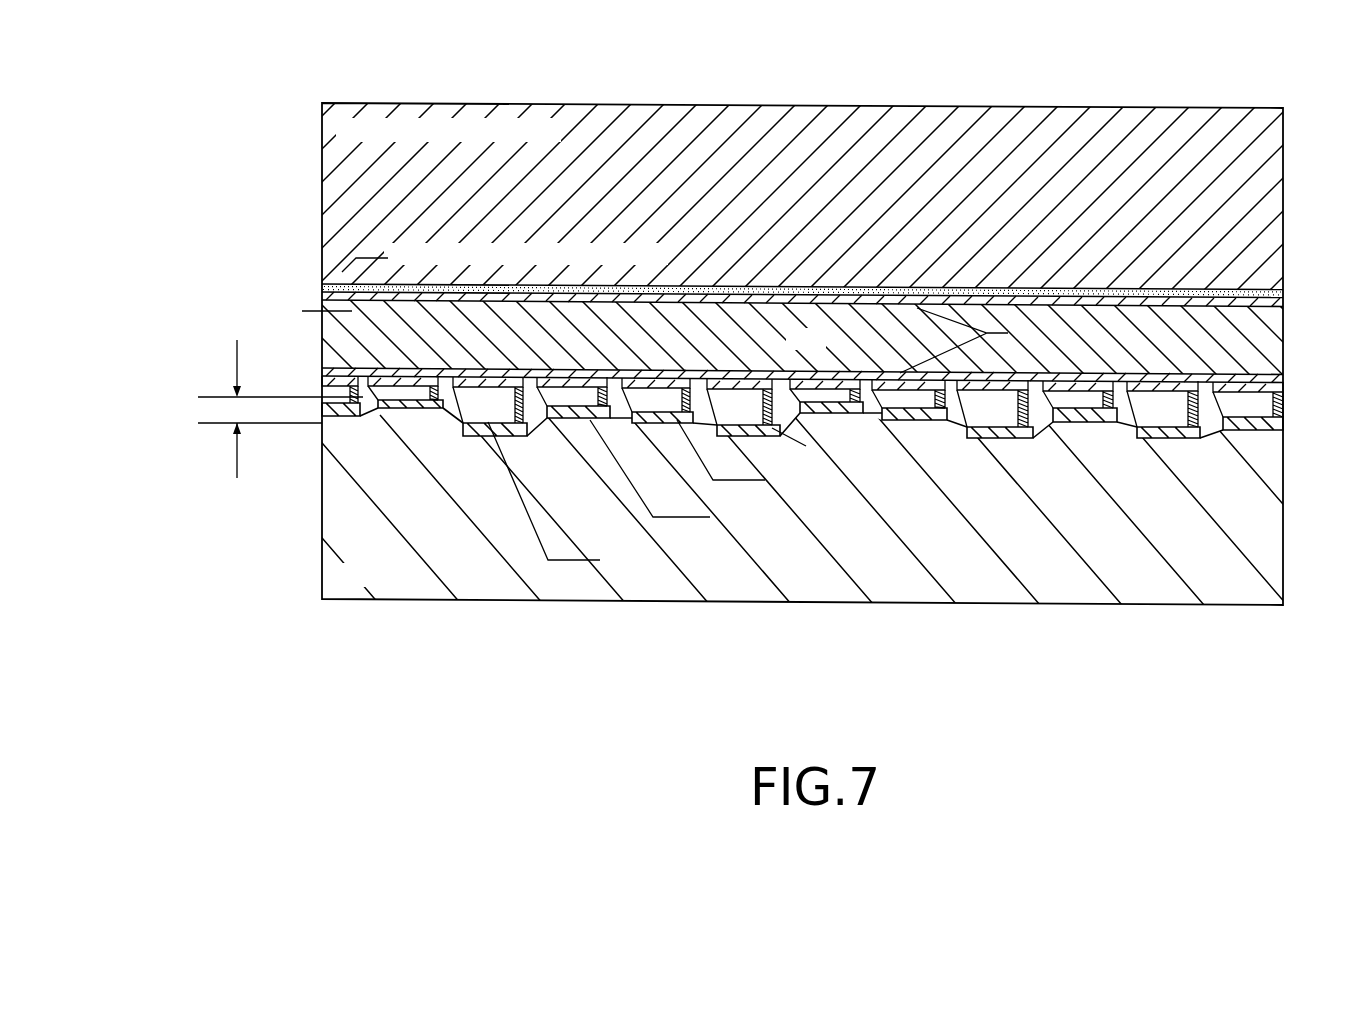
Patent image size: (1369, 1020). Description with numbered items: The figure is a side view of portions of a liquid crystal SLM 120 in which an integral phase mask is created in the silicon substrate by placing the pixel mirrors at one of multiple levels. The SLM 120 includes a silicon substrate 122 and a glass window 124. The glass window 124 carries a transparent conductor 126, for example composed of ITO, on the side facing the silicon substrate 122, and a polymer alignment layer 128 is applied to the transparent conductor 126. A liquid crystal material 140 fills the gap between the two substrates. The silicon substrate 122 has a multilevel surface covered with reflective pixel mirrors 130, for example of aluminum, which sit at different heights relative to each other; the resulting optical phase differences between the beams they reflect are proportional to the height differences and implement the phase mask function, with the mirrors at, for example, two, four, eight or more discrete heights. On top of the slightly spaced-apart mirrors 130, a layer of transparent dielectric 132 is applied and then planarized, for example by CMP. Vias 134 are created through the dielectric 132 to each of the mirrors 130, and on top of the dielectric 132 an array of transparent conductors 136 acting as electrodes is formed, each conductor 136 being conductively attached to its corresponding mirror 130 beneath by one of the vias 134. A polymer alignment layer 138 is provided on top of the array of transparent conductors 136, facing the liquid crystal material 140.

The liquid crystal SLM 120 is at (226, 180).
The silicon substrate 122 is at (490, 568).
The glass window 124 is at (1062, 127).
The transparent conductor 126 is at (322, 286).
The polymer alignment layer 128 is at (1277, 303).
The pixel mirrors 130 is at (1190, 442).
The transparent dielectric 132 is at (1260, 403).
The vias 134 is at (1203, 405).
The transparent conductors 136 is at (1190, 387).
The polymer alignment layer 138 is at (322, 368).
The liquid crystal material 140 is at (628, 345).